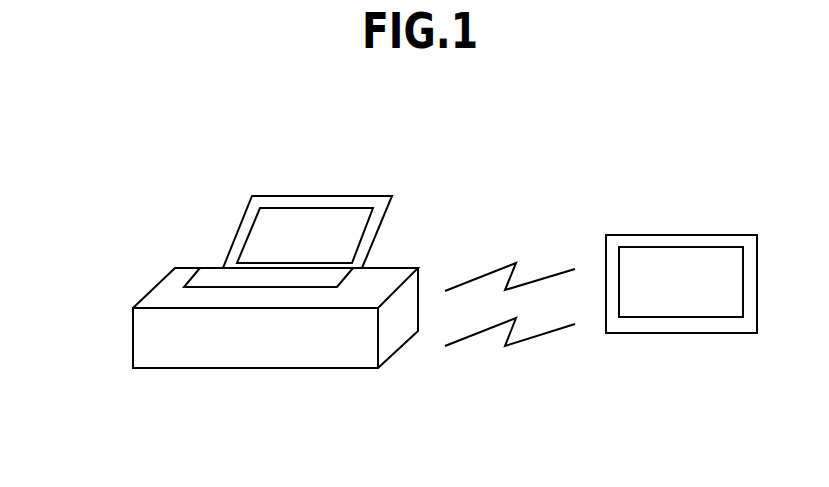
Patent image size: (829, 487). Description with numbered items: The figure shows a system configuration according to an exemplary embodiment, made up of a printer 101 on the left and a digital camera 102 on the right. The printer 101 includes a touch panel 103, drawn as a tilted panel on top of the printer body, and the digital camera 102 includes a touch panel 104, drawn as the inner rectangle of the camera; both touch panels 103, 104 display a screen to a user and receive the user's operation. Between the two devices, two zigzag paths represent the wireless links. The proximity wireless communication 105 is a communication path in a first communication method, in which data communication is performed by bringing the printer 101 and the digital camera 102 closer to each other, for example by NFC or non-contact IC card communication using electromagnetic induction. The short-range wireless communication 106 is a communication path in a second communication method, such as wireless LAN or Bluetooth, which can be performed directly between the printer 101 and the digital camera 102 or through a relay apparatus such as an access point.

The printer 101 is at (132, 337).
The digital camera 102 is at (683, 235).
The touch panel 103 is at (320, 223).
The touch panel 104 is at (682, 304).
The proximity wireless communication 105 is at (540, 278).
The short-range wireless communication 106 is at (540, 337).